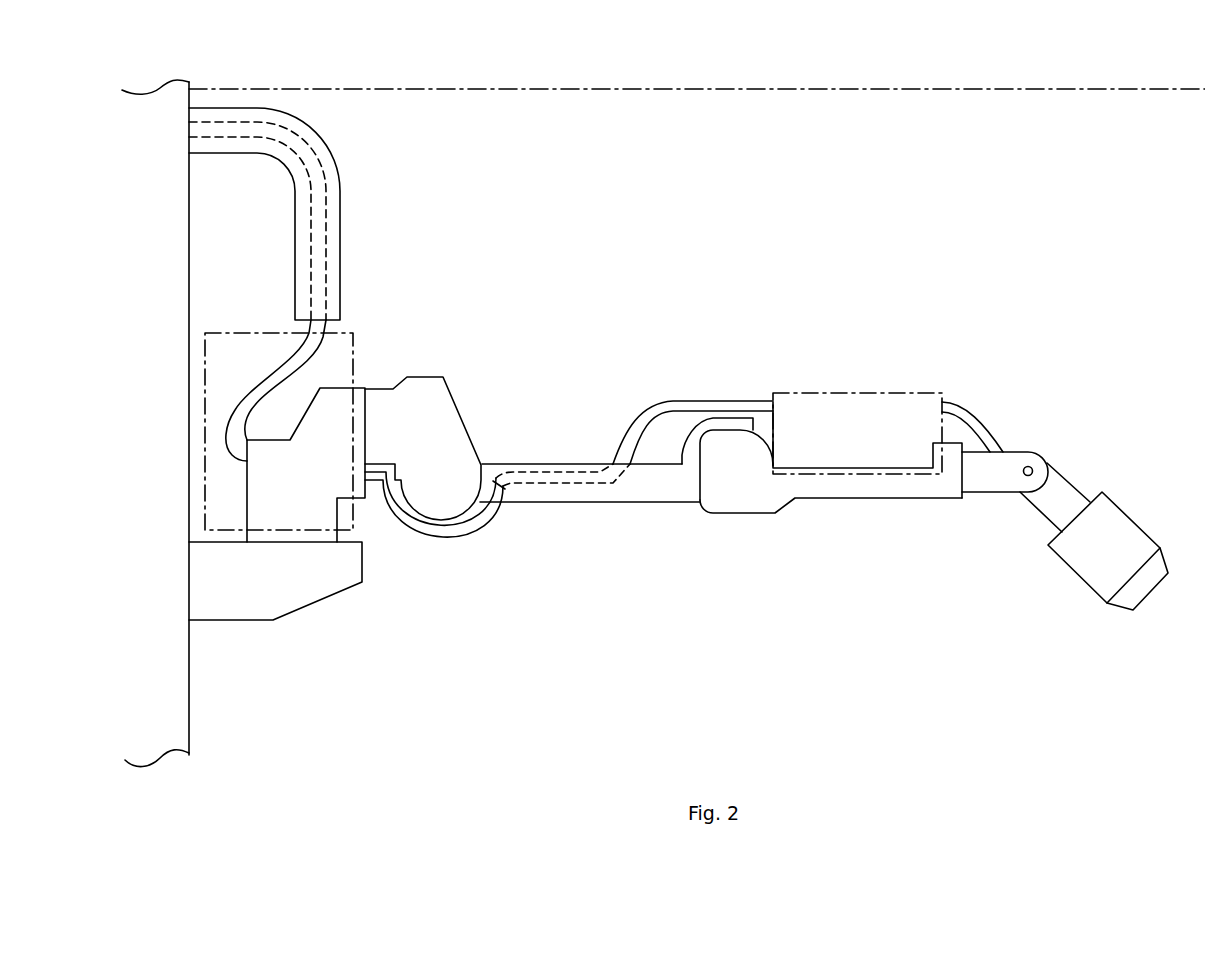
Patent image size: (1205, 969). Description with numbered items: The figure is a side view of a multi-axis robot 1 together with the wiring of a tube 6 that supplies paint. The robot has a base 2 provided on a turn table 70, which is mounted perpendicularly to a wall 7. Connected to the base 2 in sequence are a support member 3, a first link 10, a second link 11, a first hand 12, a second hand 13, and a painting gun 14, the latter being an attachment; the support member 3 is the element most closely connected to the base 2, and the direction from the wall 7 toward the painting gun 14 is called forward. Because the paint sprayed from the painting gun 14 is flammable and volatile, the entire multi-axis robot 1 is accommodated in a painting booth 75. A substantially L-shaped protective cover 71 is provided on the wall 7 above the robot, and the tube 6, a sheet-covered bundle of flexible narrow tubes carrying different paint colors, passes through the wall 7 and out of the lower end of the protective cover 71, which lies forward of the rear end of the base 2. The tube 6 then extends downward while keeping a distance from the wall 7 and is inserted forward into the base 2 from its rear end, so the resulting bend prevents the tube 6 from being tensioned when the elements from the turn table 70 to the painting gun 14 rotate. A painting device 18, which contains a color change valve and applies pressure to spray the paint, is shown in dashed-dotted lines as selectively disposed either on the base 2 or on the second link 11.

The multi-axis robot 1 is at (771, 572).
The base 2 is at (310, 480).
The support member 3 is at (440, 483).
The tube 6 is at (313, 358).
The wall 7 is at (188, 215).
The first link 10 is at (628, 492).
The second link 11 is at (820, 486).
The first hand 12 is at (993, 478).
The second hand 13 is at (1062, 492).
The painting gun 14 is at (1122, 532).
The painting device 18 is at (250, 333).
The turn table 70 is at (308, 585).
The protective cover 71 is at (338, 178).
The painting booth 75 is at (828, 88).